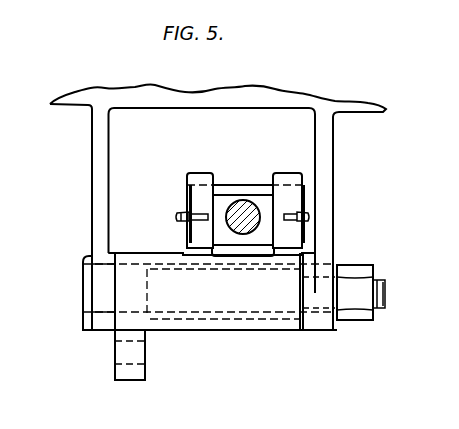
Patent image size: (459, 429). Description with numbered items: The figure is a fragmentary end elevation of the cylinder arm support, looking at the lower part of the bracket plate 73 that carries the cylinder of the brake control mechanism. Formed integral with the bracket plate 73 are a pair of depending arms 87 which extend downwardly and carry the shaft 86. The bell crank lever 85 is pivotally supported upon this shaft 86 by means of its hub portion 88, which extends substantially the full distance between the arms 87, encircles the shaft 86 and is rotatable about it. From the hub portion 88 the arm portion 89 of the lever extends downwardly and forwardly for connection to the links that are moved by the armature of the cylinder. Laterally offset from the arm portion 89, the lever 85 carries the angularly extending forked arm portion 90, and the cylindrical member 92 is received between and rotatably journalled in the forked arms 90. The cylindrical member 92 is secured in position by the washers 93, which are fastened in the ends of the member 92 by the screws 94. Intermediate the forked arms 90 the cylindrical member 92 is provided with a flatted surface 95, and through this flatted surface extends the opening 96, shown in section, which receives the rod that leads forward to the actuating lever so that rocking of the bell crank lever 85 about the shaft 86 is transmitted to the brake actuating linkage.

The bracket plate 73 is at (381, 113).
The bell crank lever 85 is at (212, 330).
The shaft 86 is at (83, 285).
The depending arms 87 is at (92, 163).
The hub portion 88 is at (240, 331).
The arm portion 89 is at (145, 340).
The forked arm portion 90 is at (205, 173).
The cylindrical member 92 is at (241, 185).
The washers 93 is at (189, 190).
The screws 94 is at (180, 213).
The flatted surface 95 is at (266, 234).
The opening 96 is at (245, 232).